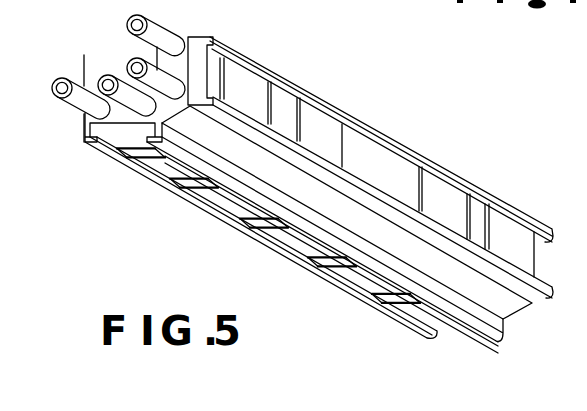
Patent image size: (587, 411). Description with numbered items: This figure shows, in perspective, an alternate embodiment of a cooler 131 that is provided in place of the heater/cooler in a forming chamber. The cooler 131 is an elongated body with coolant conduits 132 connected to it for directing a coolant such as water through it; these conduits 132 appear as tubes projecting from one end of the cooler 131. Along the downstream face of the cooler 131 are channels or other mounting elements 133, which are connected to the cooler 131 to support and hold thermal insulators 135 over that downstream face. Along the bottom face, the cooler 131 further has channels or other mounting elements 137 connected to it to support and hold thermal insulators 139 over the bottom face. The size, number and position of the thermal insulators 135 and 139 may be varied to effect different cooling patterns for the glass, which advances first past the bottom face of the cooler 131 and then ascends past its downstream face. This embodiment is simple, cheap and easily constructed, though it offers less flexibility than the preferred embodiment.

The cooler 131 is at (184, 33).
The coolant conduits 132 is at (142, 36).
The channels or other mounting elements 133 is at (311, 93).
The thermal insulators 135 is at (340, 136).
The channels or other mounting elements 137 is at (428, 342).
The thermal insulators 139 is at (357, 276).